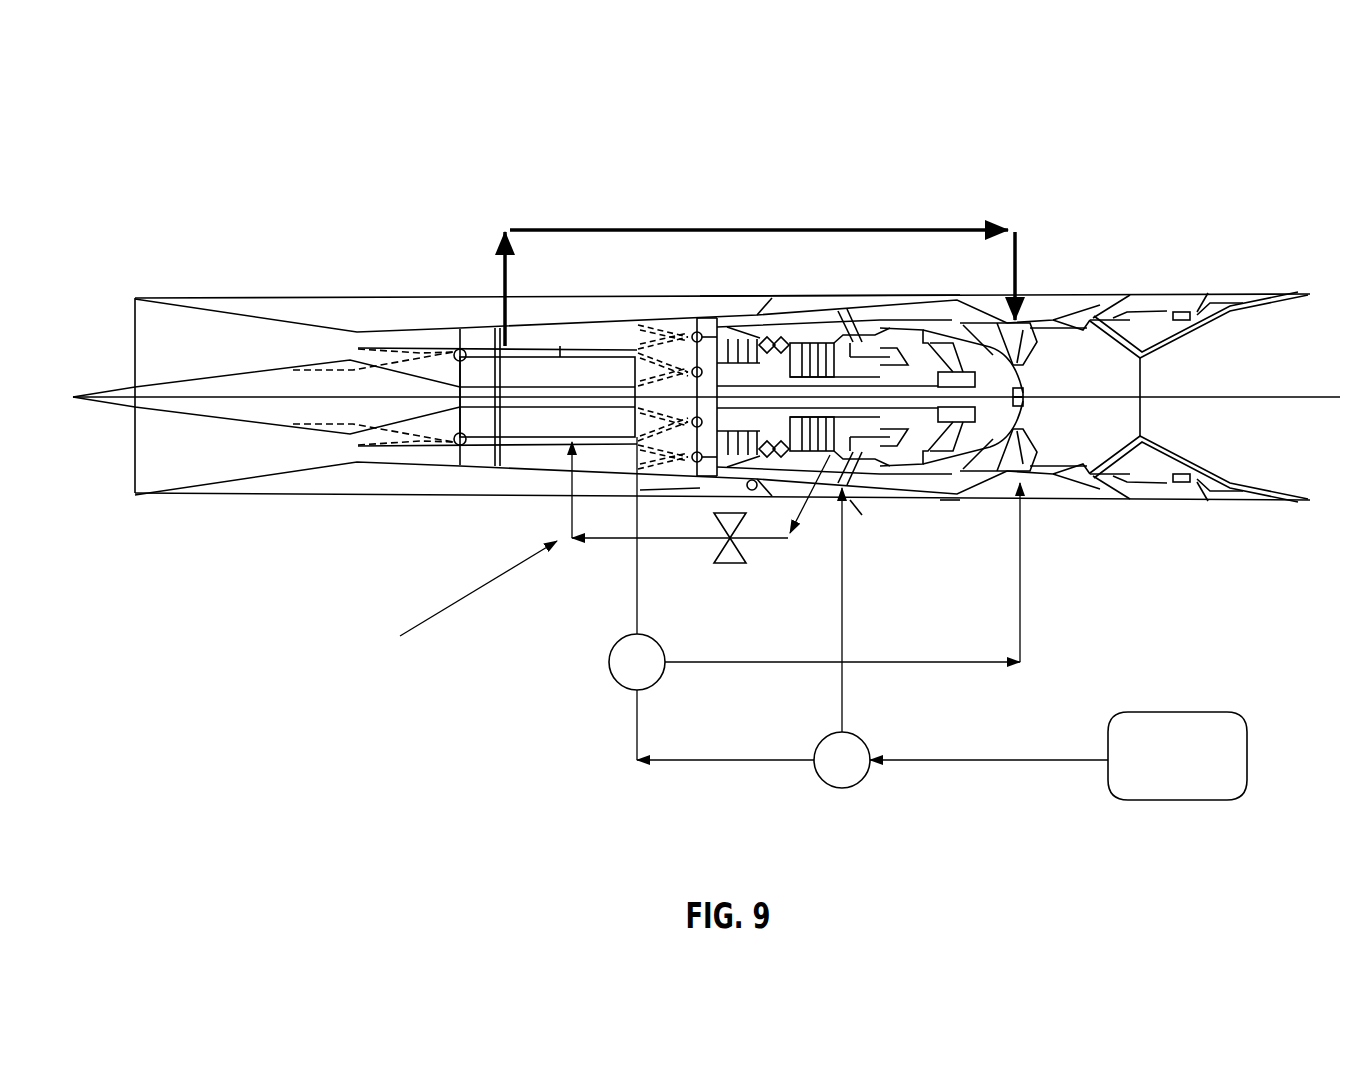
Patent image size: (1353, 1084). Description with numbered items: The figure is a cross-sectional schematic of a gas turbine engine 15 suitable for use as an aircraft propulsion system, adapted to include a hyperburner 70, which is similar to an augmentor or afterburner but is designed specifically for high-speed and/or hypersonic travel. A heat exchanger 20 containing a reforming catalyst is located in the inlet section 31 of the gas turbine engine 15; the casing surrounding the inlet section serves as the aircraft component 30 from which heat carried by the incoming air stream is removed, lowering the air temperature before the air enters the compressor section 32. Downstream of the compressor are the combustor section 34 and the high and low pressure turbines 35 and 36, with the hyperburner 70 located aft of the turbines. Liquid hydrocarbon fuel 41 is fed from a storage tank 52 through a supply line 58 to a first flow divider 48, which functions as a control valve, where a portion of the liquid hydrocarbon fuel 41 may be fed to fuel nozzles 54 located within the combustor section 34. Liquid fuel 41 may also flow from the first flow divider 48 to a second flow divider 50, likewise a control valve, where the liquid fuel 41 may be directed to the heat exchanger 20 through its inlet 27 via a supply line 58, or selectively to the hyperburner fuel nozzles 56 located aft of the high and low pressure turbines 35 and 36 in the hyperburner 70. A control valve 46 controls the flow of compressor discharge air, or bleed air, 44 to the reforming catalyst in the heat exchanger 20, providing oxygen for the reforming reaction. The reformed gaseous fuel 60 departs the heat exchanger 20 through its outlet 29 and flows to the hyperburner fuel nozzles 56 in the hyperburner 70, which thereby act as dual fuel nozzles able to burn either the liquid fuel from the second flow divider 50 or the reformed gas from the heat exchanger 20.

The gas turbine engine 15 is at (908, 162).
The heat exchanger 20 is at (520, 449).
The inlet 27 is at (627, 473).
The outlet 29 is at (532, 200).
The aircraft component 30 is at (558, 346).
The inlet section 31 is at (658, 492).
The compressor section 32 is at (858, 518).
The combustor section 34 is at (948, 508).
The high pressure turbine 35 is at (945, 292).
The low pressure turbine 36 is at (1002, 280).
The liquid hydrocarbon fuel 41 is at (1172, 776).
The compressor discharge air 44 is at (268, 830).
The control valve 46 is at (730, 565).
The first flow divider 48 is at (831, 877).
The second flow divider 50 is at (540, 763).
The storage tank 52 is at (1248, 775).
The fuel nozzles 54 is at (863, 467).
The hyperburner fuel nozzles 56 is at (1141, 283).
The supply line 58 is at (637, 601).
The reformed fuel 60 is at (782, 228).
The hyperburner 70 is at (1237, 182).